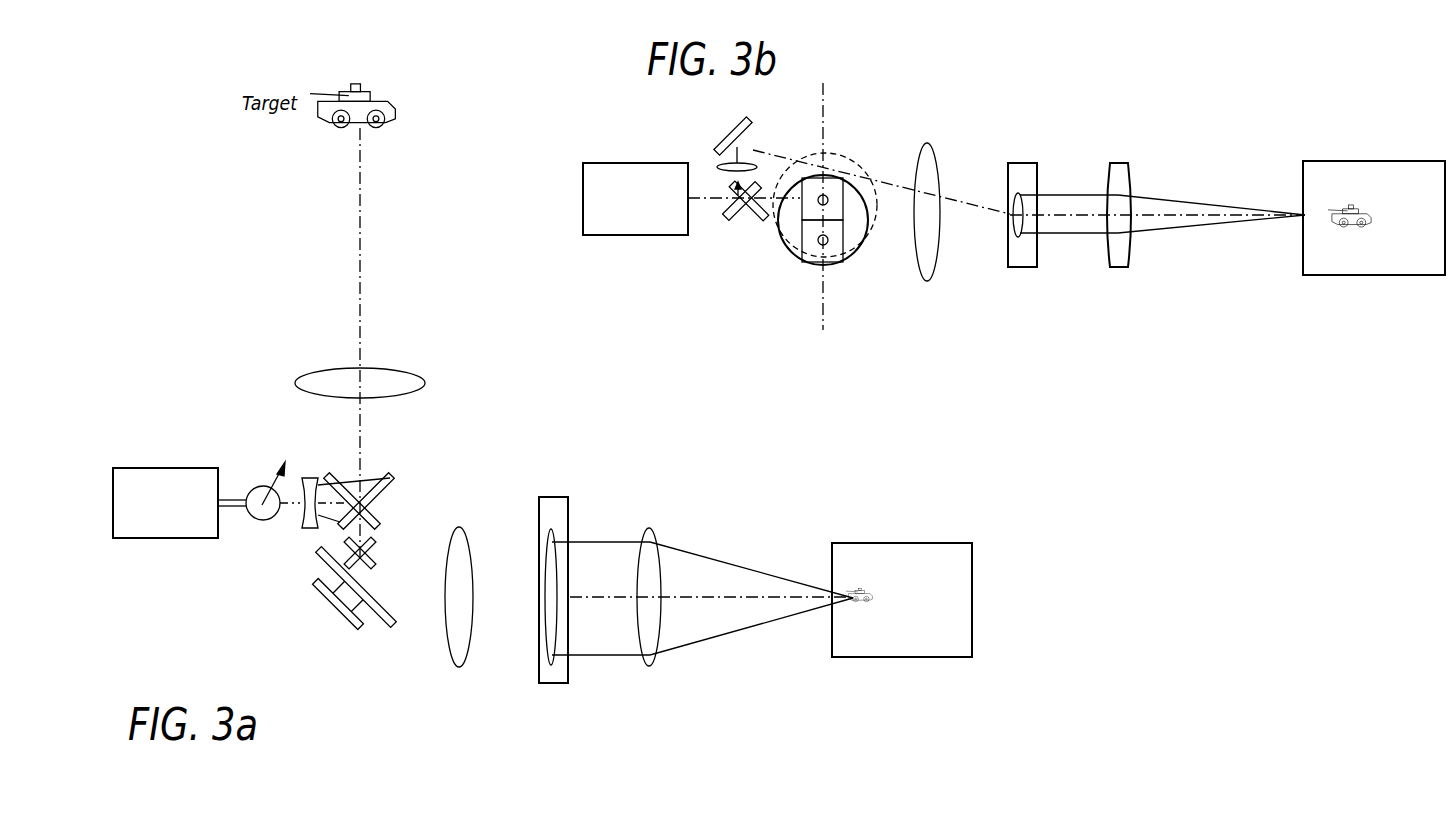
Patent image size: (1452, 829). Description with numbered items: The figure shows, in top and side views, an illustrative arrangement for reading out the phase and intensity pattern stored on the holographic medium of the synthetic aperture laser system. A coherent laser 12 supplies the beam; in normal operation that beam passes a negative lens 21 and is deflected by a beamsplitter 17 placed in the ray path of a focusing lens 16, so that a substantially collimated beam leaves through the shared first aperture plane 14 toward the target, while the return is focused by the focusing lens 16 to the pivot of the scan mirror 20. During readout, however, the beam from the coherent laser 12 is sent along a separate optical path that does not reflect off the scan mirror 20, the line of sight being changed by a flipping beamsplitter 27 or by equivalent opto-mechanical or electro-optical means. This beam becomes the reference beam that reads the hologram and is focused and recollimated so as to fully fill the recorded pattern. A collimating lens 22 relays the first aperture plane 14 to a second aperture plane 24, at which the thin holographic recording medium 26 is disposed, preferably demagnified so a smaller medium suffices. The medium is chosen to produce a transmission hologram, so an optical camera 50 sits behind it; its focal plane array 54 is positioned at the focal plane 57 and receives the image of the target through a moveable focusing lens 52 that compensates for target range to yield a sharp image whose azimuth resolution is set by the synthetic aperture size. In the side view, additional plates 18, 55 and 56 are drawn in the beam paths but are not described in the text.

In FIG. 3a, the coherent laser 12 is at (137, 468).
In FIG. 3b, the coherent laser 12 is at (607, 163).
In FIG. 3a, the first aperture plane 14 is at (472, 380).
In FIG. 3a, the focusing lens 16 is at (425, 382).
In FIG. 3b, the focusing lens 16 is at (836, 153).
In FIG. 3a, the beamsplitter 17 is at (395, 478).
In FIG. 3b, the beamsplitter 17 is at (838, 184).
In FIG. 3a, the second beam splitter plate 18 is at (380, 520).
In FIG. 3b, the second beam splitter plate 18 is at (838, 245).
In FIG. 3a, the scan mirror 20 is at (385, 620).
In FIG. 3b, the scan mirror 20 is at (793, 262).
In FIG. 3a, the negative lens 21 is at (310, 477).
In FIG. 3a, the collimating lens 22 is at (465, 662).
In FIG. 3b, the collimating lens 22 is at (928, 282).
In FIG. 3a, the second aperture plane 24 is at (553, 695).
In FIG. 3a, the holographic recording medium 26 is at (568, 680).
In FIG. 3b, the holographic recording medium 26 is at (1037, 252).
In FIG. 3a, the flipping beamsplitter 27 is at (265, 520).
In FIG. 3b, the flipping beamsplitter 27 is at (738, 218).
In FIG. 3a, the optical camera 50 is at (925, 508).
In FIG. 3a, the focusing lens 52 is at (655, 660).
In FIG. 3b, the focusing lens 52 is at (1133, 250).
In FIG. 3a, the focal plane array 54 is at (933, 657).
In FIG. 3b, the focal plane array 54 is at (1402, 275).
In FIG. 3b, the reference beam lens 55 is at (726, 164).
In FIG. 3b, the reference beam mirror 56 is at (727, 140).
In FIG. 3a, the focal plane 57 is at (858, 632).
In FIG. 3b, the focal plane 57 is at (1344, 240).